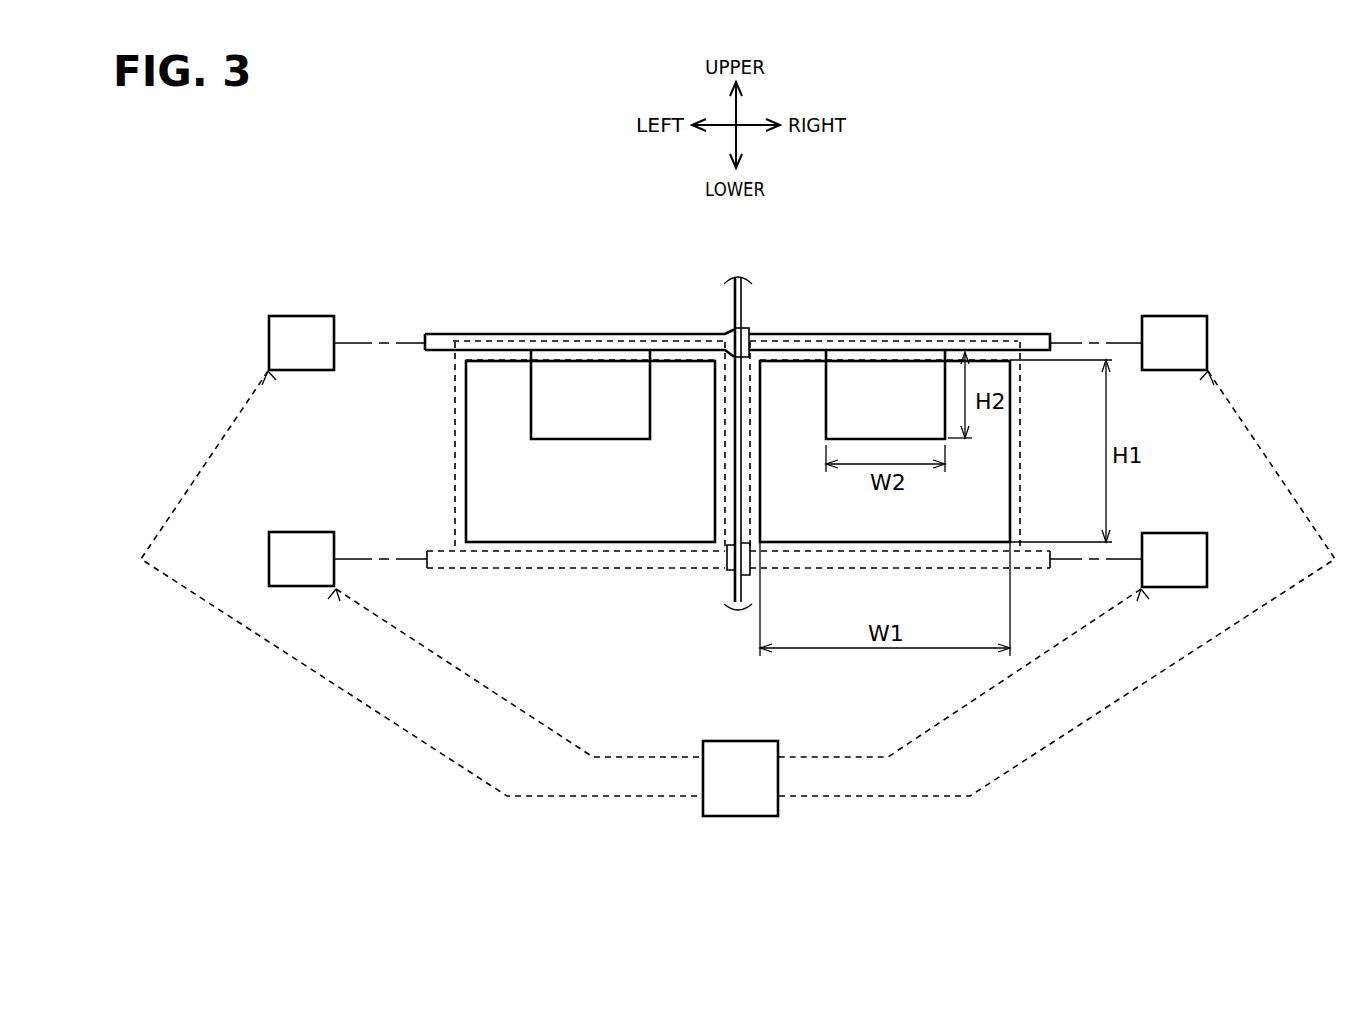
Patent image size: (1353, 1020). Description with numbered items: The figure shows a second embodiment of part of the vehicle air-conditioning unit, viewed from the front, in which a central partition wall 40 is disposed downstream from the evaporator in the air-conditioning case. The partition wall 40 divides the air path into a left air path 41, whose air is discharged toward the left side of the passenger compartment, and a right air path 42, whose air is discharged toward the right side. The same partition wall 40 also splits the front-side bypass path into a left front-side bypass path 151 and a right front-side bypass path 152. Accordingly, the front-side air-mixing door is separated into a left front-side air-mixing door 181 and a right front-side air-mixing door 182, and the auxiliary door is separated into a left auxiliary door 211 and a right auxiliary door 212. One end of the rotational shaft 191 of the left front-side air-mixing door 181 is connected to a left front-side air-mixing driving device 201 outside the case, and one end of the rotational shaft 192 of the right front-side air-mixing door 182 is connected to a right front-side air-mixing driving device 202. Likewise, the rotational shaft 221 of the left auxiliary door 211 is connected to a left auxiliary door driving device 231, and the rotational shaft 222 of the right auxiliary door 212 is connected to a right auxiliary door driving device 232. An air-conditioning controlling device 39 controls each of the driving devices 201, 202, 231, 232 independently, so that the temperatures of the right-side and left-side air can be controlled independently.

The air-conditioning controlling device 39 is at (755, 816).
The partition wall 40 is at (736, 307).
The left air path 41 is at (710, 317).
The right air path 42 is at (770, 315).
The left front-side bypass path 151 is at (466, 441).
The right front-side bypass path 152 is at (1010, 445).
The left front-side air-mixing door 181 is at (636, 512).
The right front-side air-mixing door 182 is at (950, 525).
The rotational shaft 191 is at (475, 569).
The rotational shaft 192 is at (1030, 570).
The left front-side air-mixing driving device 201 is at (302, 586).
The right front-side air-mixing driving device 202 is at (1172, 587).
The left auxiliary door 211 is at (580, 395).
The right auxiliary door 212 is at (875, 395).
The rotational shaft 221 is at (508, 335).
The rotational shaft 222 is at (950, 335).
The left auxiliary door driving device 231 is at (302, 316).
The right auxiliary door driving device 232 is at (1170, 316).